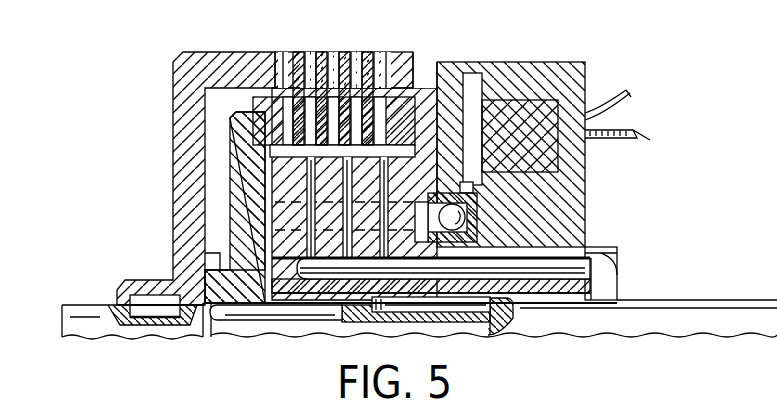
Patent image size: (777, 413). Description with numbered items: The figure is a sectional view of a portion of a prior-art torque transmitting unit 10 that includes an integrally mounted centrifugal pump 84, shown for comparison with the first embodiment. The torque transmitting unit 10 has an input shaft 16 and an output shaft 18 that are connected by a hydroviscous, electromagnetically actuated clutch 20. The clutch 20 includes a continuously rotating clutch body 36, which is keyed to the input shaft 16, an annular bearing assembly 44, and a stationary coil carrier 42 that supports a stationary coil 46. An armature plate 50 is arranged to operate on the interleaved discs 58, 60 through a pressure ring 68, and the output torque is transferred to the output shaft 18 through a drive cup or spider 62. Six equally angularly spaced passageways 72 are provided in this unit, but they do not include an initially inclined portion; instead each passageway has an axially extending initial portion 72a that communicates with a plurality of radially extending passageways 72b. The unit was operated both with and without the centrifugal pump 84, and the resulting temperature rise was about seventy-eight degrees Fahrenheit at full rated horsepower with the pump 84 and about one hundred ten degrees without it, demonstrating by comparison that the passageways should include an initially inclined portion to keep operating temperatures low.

The torque transmitting unit 10 is at (600, 190).
The input shaft 16 is at (721, 302).
The output shaft 18 is at (102, 324).
The hydroviscous, electromagnetically actuated clutch 20 is at (462, 52).
The clutch body 36 is at (312, 290).
The stationary coil carrier 42 is at (533, 104).
The annular bearing assembly 44 is at (480, 238).
The stationary coil 46 is at (545, 100).
The armature plate 50 is at (242, 188).
The interleaved discs 58 is at (415, 56).
The interleaved discs 60 is at (356, 8).
The drive cup or spider 62 is at (183, 132).
The pressure ring 68 is at (252, 98).
The passageways 72 is at (528, 285).
The axially extending initial portion 72a is at (553, 268).
The radially extending passageways 72b is at (355, 191).
The centrifugal pump 84 is at (587, 256).